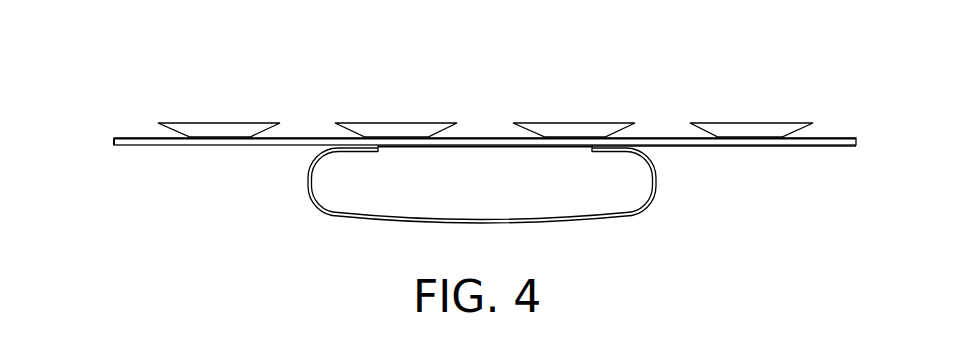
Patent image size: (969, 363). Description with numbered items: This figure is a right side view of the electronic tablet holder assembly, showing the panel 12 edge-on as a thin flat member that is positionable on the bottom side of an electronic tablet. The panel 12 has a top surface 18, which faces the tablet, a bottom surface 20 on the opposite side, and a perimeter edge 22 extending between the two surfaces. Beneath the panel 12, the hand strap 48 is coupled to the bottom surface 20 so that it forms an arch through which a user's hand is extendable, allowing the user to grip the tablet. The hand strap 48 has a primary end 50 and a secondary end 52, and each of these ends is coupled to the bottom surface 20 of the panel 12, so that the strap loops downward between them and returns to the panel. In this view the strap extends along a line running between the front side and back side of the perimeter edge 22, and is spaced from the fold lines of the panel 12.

The panel 12 is at (847, 146).
The top surface 18 is at (485, 141).
The bottom surface 20 is at (744, 146).
The perimeter edge 22 is at (114, 141).
The hand strap 48 is at (386, 218).
The primary end 50 is at (378, 147).
The secondary end 52 is at (592, 148).